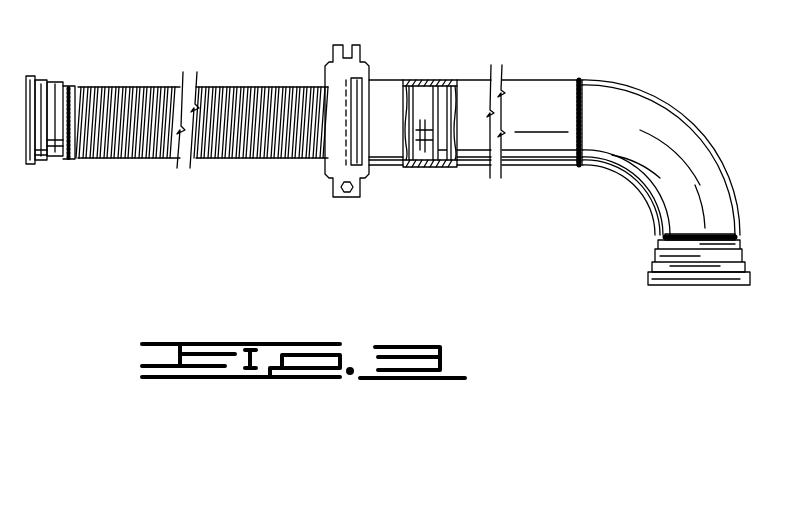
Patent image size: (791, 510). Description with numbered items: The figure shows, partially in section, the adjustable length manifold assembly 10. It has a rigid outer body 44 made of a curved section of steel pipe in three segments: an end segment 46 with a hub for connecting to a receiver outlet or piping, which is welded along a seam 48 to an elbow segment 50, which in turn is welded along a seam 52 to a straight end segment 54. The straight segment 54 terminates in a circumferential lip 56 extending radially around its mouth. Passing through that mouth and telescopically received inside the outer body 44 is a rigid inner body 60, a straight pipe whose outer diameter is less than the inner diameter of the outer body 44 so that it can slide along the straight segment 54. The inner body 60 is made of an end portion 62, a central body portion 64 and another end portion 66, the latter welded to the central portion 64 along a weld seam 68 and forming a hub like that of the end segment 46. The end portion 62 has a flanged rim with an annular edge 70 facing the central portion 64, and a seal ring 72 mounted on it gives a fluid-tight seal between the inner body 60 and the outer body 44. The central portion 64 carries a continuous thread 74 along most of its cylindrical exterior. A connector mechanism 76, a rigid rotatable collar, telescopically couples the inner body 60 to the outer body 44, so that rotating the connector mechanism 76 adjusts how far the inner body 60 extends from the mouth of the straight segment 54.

The adjustable length manifold assembly 10 is at (325, 210).
The rigid outer body 44 is at (616, 82).
The end segment 46 is at (741, 246).
The seam 48 is at (665, 236).
The elbow segment 50 is at (675, 144).
The seam 52 is at (578, 167).
The straight end segment 54 is at (532, 96).
The circumferential lip 56 is at (346, 86).
The rigid inner body 60 is at (75, 82).
The end portion 62 is at (425, 152).
The central body portion 64 is at (222, 156).
The end portion 66 is at (28, 166).
The weld seam 68 is at (72, 155).
The annular edge 70 is at (409, 84).
The seal ring 72 is at (425, 108).
The continuous thread 74 is at (211, 88).
The connector mechanism 76 is at (325, 176).